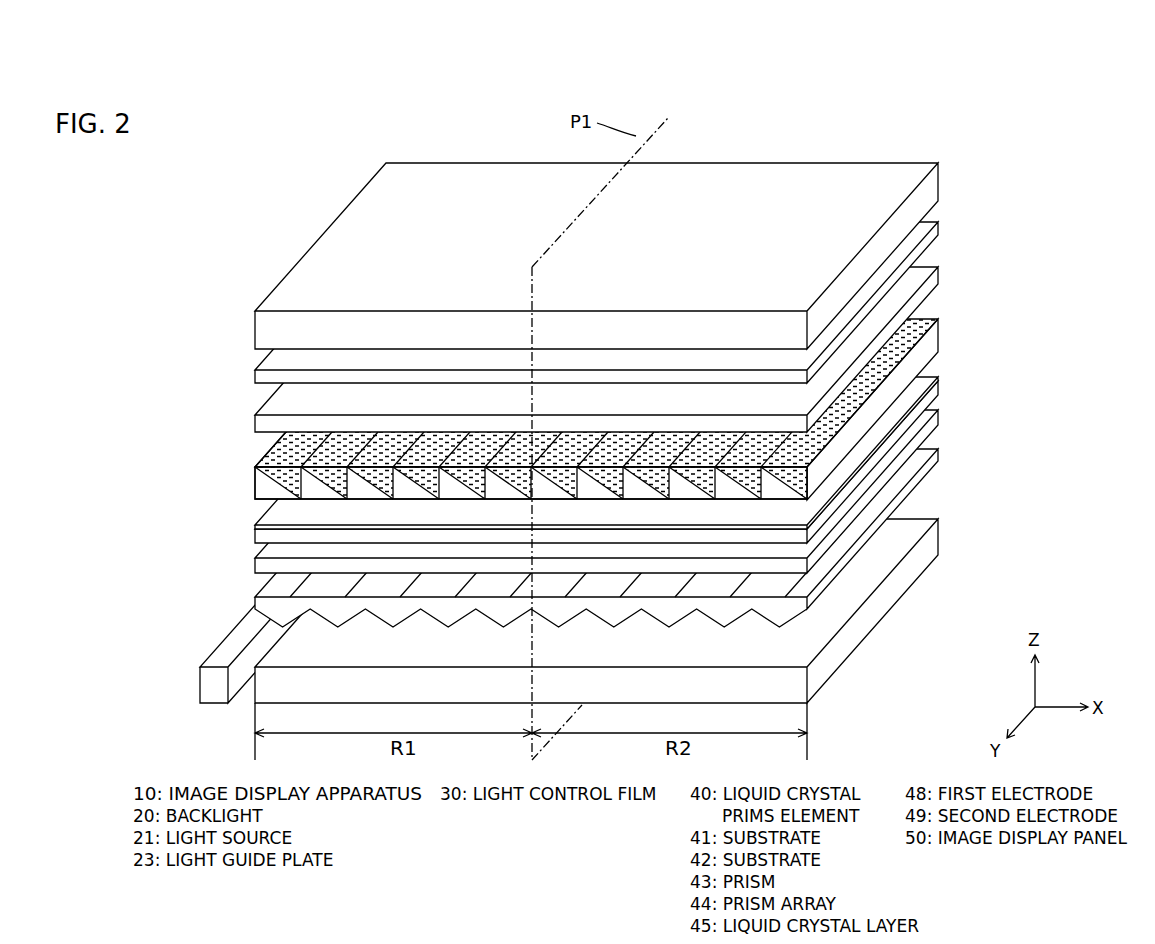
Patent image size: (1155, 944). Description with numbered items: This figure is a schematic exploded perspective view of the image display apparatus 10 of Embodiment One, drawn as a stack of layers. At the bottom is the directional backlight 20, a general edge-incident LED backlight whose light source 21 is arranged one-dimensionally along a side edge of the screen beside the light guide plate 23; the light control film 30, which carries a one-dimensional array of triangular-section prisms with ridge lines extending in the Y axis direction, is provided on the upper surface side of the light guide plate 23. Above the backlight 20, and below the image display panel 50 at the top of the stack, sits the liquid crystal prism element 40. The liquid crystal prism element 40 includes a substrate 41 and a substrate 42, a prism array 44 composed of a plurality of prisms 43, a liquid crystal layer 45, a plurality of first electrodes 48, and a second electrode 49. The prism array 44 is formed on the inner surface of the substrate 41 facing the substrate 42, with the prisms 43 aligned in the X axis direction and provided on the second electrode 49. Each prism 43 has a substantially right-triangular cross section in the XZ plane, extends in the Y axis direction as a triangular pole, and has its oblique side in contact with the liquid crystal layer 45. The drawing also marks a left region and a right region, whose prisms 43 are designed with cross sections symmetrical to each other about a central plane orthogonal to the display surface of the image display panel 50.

The image display apparatus 10 is at (1108, 186).
The directional backlight 20 is at (1029, 530).
The light source 21 is at (212, 704).
The light guide plate 23 is at (942, 518).
The light control film 30 is at (942, 453).
The liquid crystal prism element 40 is at (1031, 292).
The substrate 41 is at (258, 412).
The substrate 42 is at (255, 537).
The prism 43 is at (255, 473).
The prism array 44 is at (550, 409).
The liquid crystal layer 45 is at (943, 338).
The first electrode 48 is at (265, 435).
The second electrode 49 is at (277, 520).
The image display panel 50 is at (940, 178).